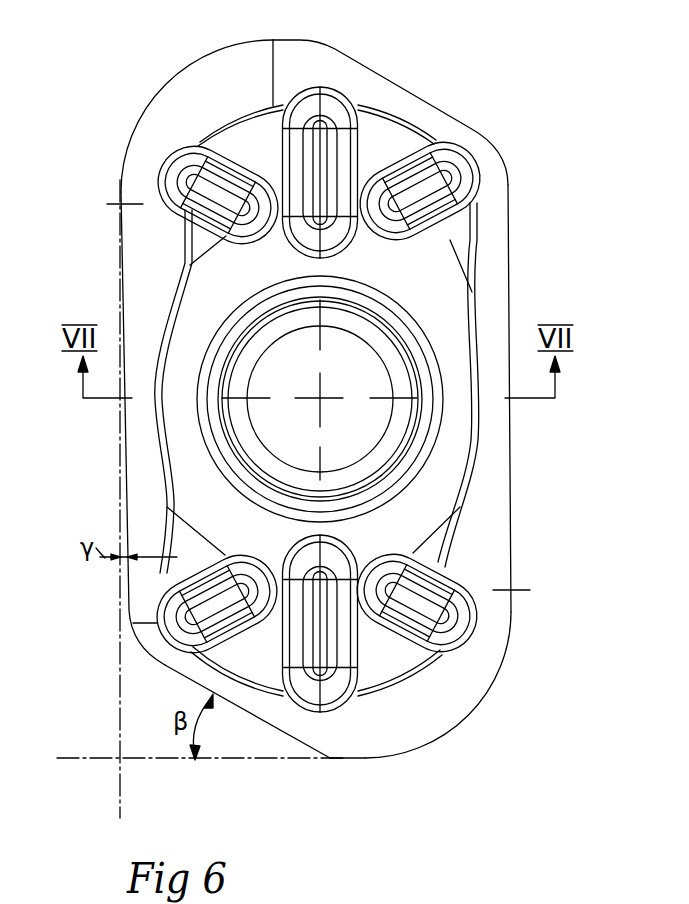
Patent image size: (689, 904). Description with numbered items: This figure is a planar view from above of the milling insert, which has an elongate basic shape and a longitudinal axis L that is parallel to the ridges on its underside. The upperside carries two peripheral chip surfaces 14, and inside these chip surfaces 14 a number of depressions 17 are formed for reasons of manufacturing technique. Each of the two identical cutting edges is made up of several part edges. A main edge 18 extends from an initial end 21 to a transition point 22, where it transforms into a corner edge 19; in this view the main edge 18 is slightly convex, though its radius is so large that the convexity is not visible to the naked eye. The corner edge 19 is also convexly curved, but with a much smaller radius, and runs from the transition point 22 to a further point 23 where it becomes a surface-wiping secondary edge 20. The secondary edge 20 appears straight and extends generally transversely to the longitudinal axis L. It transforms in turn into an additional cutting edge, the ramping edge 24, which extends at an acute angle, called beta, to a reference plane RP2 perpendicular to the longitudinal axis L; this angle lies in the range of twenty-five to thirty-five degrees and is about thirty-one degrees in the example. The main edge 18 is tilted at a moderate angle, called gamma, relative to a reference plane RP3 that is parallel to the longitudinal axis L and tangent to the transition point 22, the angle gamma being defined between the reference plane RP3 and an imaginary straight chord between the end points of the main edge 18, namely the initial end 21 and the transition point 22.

The chip surface 14 is at (504, 526).
The depressions 17 is at (398, 232).
The main edge 18 is at (120, 574).
The corner edge 19 is at (153, 93).
The surface-wiping secondary edge 20 is at (335, 758).
The initial end 21 is at (515, 183).
The transition point 22 is at (107, 204).
The transition point 23 is at (367, 690).
The ramping edge 24 is at (248, 720).
The longitudinal axis L is at (322, 390).
The reference plane RP2 is at (163, 758).
The reference plane RP3 is at (120, 737).